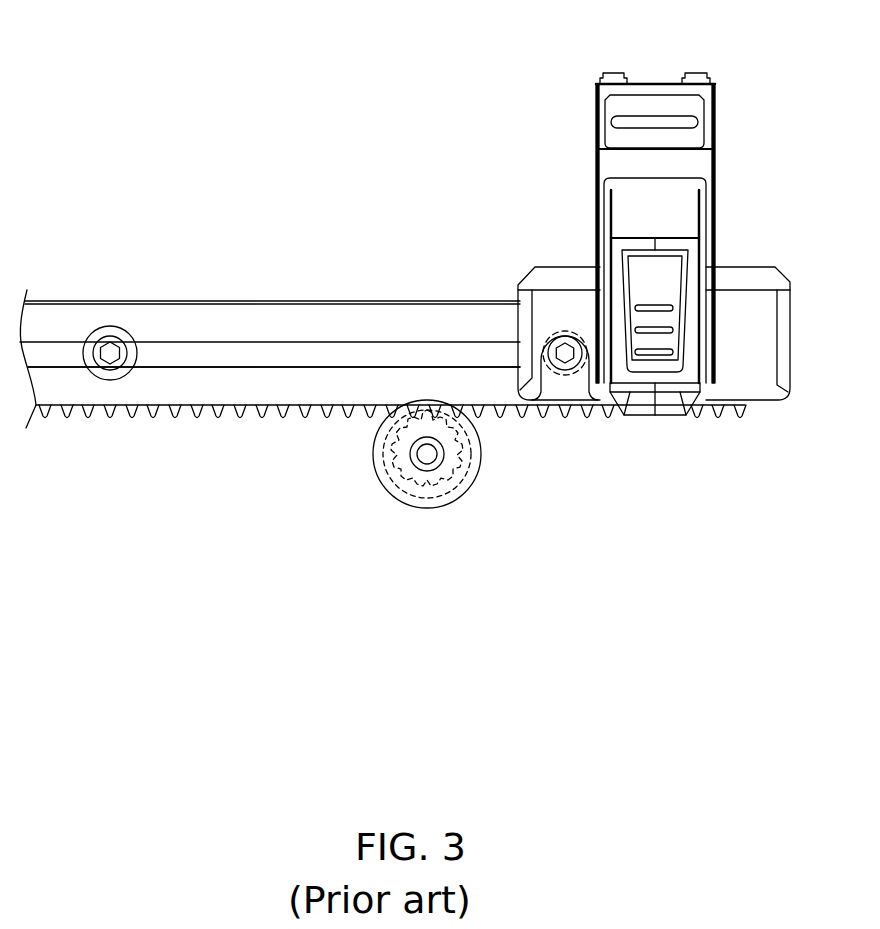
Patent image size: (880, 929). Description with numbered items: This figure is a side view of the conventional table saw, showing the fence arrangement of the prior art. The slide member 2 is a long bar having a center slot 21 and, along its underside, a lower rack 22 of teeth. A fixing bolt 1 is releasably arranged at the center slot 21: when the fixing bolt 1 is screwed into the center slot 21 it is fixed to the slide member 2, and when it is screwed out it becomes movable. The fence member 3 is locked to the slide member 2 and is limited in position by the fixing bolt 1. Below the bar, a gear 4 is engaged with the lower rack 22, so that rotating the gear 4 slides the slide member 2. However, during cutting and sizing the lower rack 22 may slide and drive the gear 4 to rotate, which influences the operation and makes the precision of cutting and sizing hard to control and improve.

The fixing bolt 1 is at (110, 330).
The slide member 2 is at (325, 332).
The center slot 21 is at (197, 368).
The lower rack 22 is at (265, 417).
The fence member 3 is at (715, 75).
The gear 4 is at (427, 500).